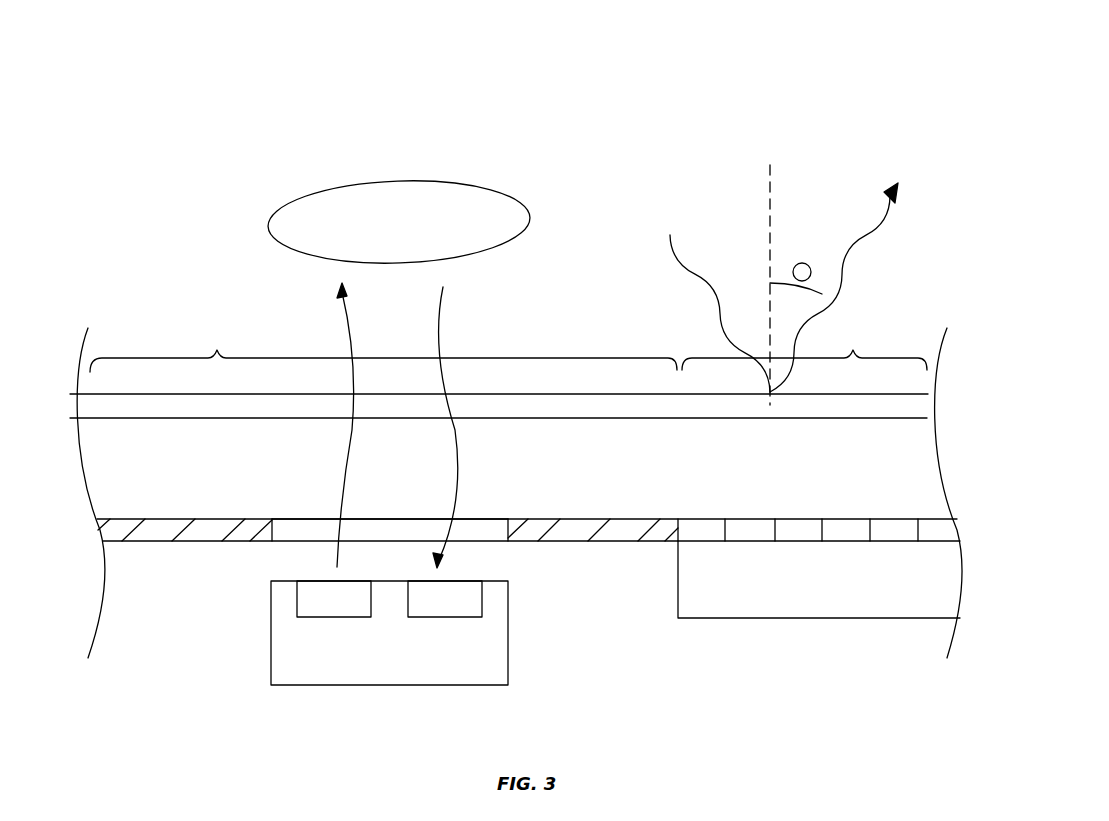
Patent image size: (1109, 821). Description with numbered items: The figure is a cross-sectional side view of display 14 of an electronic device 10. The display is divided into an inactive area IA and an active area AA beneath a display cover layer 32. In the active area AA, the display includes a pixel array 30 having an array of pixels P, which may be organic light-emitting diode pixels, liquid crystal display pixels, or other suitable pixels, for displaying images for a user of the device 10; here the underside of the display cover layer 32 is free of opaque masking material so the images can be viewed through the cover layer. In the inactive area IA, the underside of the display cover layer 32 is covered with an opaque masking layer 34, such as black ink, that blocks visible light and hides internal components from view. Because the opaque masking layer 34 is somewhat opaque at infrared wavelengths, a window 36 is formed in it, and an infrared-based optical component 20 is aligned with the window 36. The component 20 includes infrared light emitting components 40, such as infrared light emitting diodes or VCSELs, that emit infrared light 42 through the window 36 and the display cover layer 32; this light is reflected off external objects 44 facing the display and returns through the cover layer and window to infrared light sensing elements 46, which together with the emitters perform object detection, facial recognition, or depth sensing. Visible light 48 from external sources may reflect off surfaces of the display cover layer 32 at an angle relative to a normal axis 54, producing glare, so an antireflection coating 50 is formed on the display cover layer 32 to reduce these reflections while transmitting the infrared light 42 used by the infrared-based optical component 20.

The device 10 is at (759, 74).
The display 14 is at (918, 294).
The infrared-based optical component 20 is at (285, 648).
The pixel array 30 is at (798, 603).
The display cover layer 32 is at (913, 463).
The opaque masking layer 34 is at (178, 519).
The window 36 is at (487, 519).
The infrared light emitting components 40 is at (297, 597).
The infrared light 42 is at (348, 463).
The external objects 44 is at (452, 182).
The infrared light sensing elements 46 is at (482, 595).
The visible light 48 is at (692, 285).
The antireflection coating 50 is at (908, 409).
The normal axis 54 is at (773, 172).
The pixels P is at (882, 527).
The inactive area IA is at (383, 349).
The active area AA is at (804, 348).